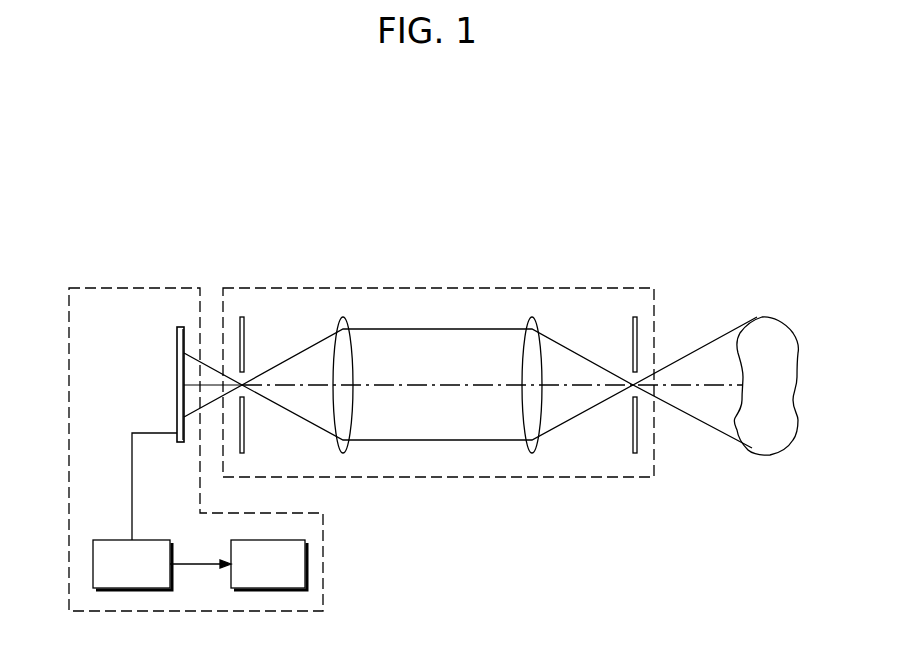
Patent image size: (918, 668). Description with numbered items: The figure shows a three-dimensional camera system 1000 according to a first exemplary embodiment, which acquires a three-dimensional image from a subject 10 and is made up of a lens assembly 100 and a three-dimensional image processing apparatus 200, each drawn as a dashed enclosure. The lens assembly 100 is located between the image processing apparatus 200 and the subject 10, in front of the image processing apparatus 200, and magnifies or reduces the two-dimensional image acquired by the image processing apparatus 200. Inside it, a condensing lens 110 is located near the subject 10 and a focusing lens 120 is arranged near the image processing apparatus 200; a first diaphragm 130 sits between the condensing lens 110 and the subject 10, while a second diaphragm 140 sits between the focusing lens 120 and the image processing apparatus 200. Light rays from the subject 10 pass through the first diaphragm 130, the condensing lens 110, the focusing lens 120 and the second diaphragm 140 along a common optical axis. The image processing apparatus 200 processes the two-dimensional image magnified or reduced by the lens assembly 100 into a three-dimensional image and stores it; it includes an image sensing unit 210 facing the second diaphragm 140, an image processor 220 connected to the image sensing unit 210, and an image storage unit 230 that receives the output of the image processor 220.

The 3D camera system 1000 is at (407, 175).
The subject 10 is at (767, 333).
The lens assembly 100 is at (493, 288).
The condensing lens 110 is at (528, 420).
The focusing lens 120 is at (345, 420).
The first diaphragm 130 is at (633, 325).
The second diaphragm 140 is at (244, 326).
The 3D image processing apparatus 200 is at (125, 288).
The image sensing unit 210 is at (177, 340).
The image processor 220 is at (150, 577).
The image storage unit 230 is at (287, 577).